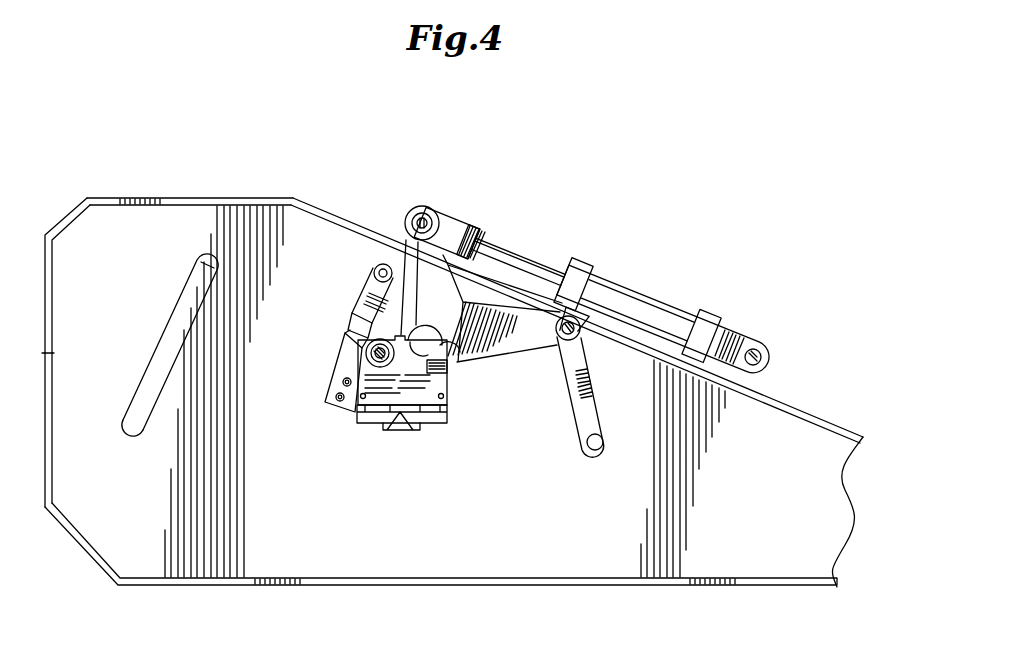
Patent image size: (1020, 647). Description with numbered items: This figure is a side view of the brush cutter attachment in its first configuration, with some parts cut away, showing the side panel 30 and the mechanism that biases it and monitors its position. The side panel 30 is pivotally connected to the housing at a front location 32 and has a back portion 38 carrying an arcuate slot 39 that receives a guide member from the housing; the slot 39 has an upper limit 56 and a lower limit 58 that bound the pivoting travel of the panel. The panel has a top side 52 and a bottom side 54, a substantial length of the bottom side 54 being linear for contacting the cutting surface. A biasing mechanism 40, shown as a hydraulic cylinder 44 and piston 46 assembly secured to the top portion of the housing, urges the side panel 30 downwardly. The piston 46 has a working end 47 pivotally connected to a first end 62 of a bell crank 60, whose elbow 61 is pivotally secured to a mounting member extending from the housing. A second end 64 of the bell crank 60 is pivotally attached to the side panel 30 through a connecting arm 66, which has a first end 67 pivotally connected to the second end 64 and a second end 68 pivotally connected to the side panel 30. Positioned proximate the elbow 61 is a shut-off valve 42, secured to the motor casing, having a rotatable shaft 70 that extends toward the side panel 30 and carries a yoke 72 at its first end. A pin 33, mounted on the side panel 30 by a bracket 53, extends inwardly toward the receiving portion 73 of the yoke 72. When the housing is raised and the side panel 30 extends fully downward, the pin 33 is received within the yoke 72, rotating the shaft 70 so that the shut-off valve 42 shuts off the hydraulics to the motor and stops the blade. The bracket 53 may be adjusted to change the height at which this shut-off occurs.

The side panel 30 is at (447, 391).
The front location 32 is at (845, 590).
The pin 33 is at (378, 267).
The back portion 38 is at (45, 465).
The arcuate slot 39 is at (144, 386).
The biasing mechanism 40 is at (585, 254).
The shut-off valve 42 is at (380, 365).
The cylinder 44 is at (648, 312).
The piston 46 is at (520, 262).
The working end 47 is at (463, 227).
The top side 52 is at (178, 198).
The bracket 53 is at (299, 478).
The bottom side 54 is at (182, 580).
The upper limit 56 is at (217, 255).
The lower limit 58 is at (133, 428).
The bell crank 60 is at (503, 353).
The elbow 61 is at (445, 385).
The first end 62 is at (422, 223).
The second end 64 is at (712, 492).
The first end 67 is at (650, 480).
The connecting arm 66 is at (603, 457).
The second end 68 is at (603, 343).
The rotatable shaft 70 is at (400, 425).
The yoke 72 is at (335, 395).
The receiving portion 73 is at (350, 322).